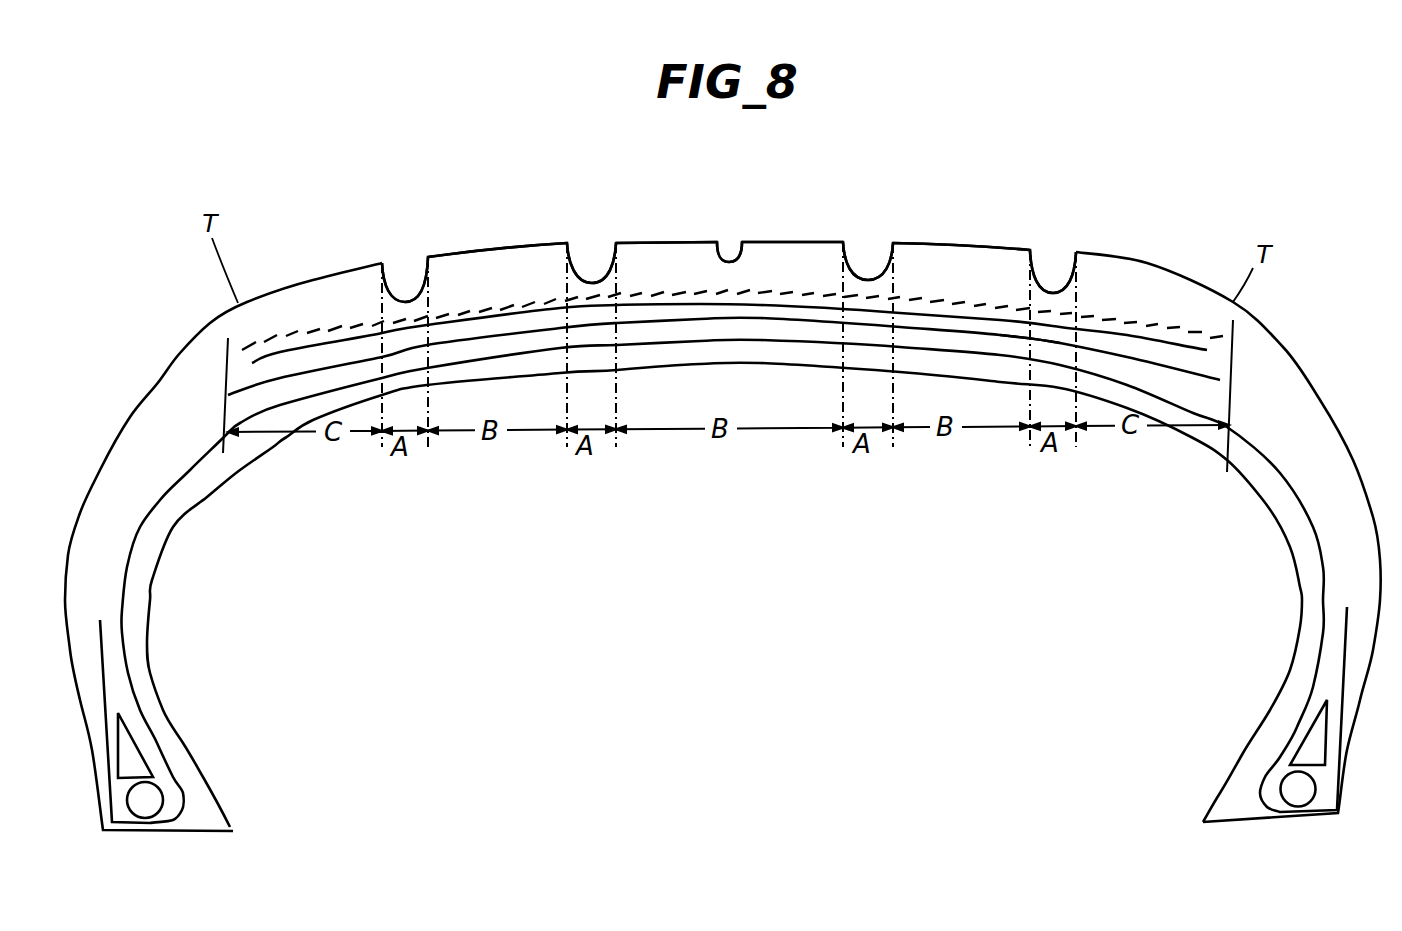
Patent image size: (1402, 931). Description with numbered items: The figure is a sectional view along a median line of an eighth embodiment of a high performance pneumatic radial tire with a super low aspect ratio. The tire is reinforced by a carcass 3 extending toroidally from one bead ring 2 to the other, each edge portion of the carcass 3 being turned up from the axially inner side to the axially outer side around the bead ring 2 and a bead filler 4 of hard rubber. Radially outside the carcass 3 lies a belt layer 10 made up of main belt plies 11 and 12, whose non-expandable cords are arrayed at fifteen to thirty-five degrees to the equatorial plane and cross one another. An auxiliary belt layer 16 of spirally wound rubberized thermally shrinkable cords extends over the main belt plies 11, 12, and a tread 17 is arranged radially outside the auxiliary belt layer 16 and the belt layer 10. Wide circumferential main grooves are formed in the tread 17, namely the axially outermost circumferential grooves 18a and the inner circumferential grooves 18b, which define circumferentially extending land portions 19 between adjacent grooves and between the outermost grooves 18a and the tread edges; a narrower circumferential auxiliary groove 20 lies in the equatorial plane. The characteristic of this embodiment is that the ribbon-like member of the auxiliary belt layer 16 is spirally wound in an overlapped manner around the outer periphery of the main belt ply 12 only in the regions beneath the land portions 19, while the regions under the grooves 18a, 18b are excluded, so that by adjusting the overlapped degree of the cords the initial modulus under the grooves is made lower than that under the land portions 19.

The bead ring 2 is at (152, 802).
The carcass 3 is at (163, 500).
The bead filler 4 is at (133, 757).
The belt layer 10 is at (701, 319).
The main belt ply 11 is at (1022, 345).
The main belt ply 12 is at (1120, 340).
The auxiliary belt layer 16 is at (290, 336).
The tread 17 is at (958, 243).
The axially outermost circumferential groove 18a is at (412, 265).
The circumferential groove 18b is at (592, 253).
The land portion 19 is at (507, 247).
The circumferential auxiliary groove 20 is at (728, 240).